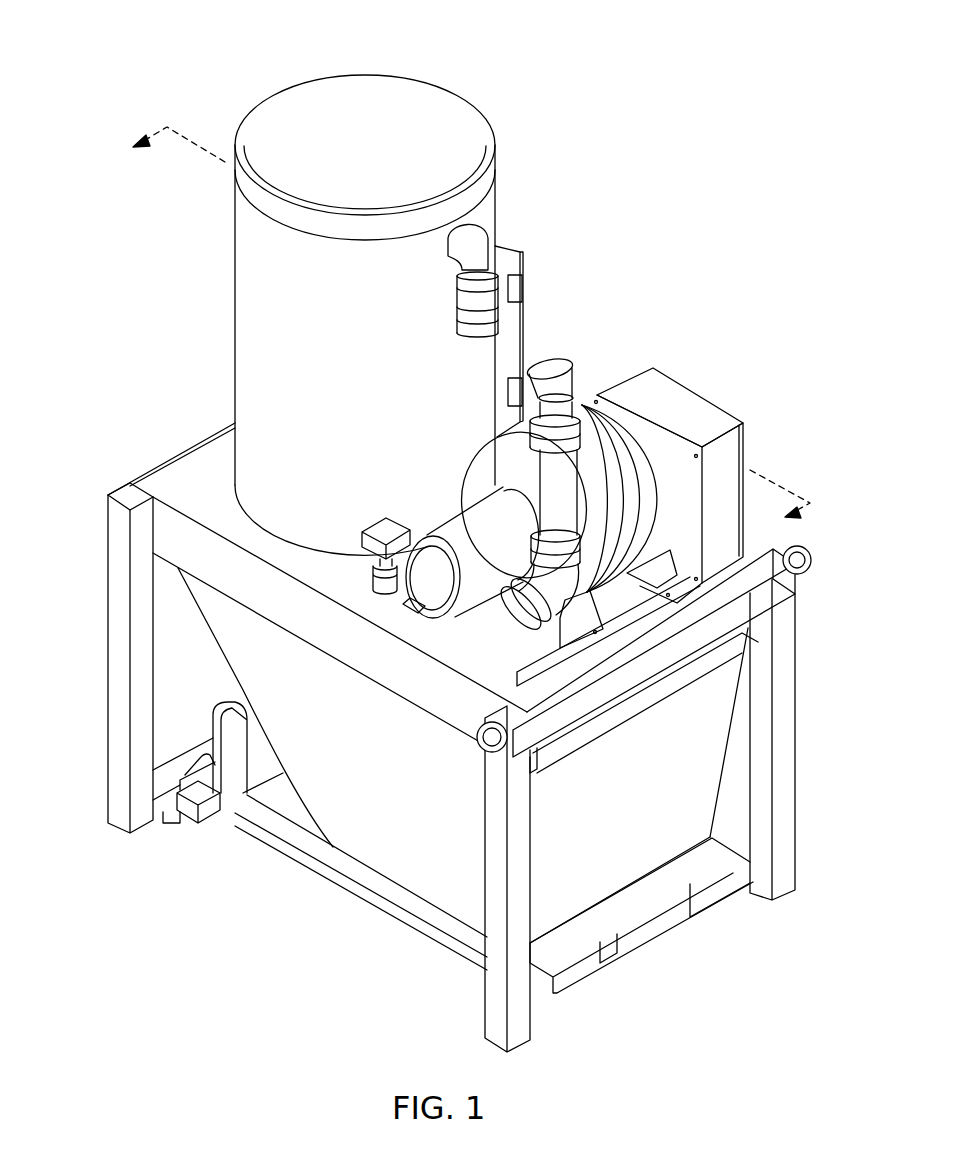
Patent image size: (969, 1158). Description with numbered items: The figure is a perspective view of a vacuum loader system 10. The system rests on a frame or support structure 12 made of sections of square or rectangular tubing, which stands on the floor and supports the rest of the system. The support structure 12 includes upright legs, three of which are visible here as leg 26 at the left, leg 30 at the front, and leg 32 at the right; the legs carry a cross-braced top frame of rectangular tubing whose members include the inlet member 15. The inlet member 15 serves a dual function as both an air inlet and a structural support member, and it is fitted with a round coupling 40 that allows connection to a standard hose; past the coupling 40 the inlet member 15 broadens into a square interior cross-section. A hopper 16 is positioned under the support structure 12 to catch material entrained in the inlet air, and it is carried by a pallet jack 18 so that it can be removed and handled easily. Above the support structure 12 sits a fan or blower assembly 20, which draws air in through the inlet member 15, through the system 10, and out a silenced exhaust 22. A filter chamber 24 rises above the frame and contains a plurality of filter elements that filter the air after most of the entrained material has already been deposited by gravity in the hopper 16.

The vacuum loader system 10 is at (280, 63).
The support structure 12 is at (95, 601).
The inlet member 15 is at (800, 568).
The hopper 16 is at (400, 878).
The pallet jack 18 is at (262, 815).
The blower assembly 20 is at (586, 430).
The silenced exhaust 22 is at (563, 390).
The filter chamber 24 is at (245, 320).
The leg 26 is at (113, 667).
The leg 30 is at (496, 1008).
The leg 32 is at (792, 781).
The round coupling 40 is at (484, 745).